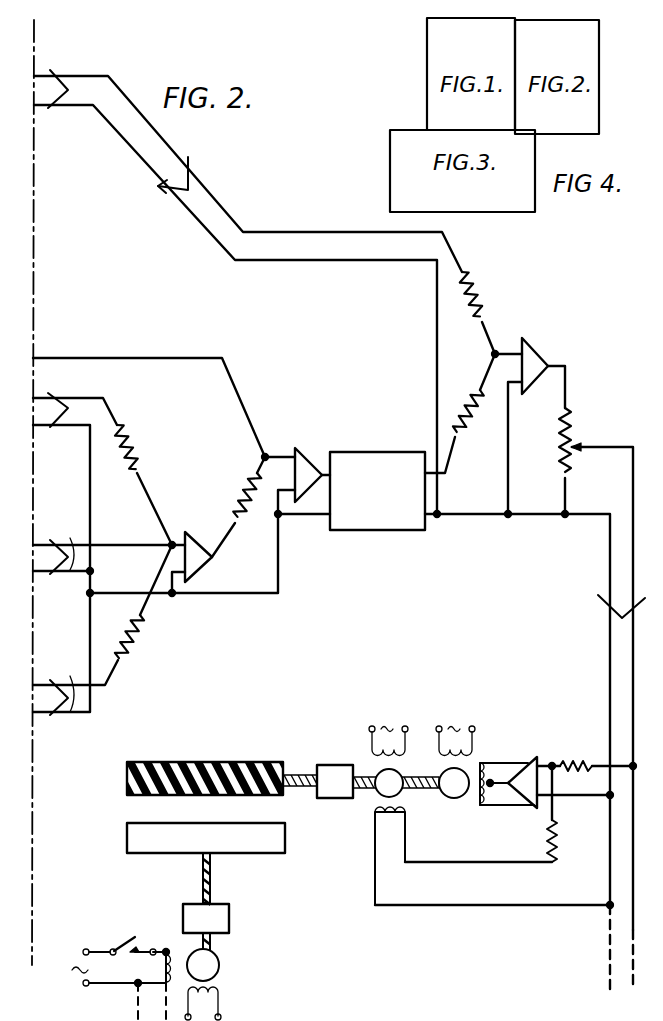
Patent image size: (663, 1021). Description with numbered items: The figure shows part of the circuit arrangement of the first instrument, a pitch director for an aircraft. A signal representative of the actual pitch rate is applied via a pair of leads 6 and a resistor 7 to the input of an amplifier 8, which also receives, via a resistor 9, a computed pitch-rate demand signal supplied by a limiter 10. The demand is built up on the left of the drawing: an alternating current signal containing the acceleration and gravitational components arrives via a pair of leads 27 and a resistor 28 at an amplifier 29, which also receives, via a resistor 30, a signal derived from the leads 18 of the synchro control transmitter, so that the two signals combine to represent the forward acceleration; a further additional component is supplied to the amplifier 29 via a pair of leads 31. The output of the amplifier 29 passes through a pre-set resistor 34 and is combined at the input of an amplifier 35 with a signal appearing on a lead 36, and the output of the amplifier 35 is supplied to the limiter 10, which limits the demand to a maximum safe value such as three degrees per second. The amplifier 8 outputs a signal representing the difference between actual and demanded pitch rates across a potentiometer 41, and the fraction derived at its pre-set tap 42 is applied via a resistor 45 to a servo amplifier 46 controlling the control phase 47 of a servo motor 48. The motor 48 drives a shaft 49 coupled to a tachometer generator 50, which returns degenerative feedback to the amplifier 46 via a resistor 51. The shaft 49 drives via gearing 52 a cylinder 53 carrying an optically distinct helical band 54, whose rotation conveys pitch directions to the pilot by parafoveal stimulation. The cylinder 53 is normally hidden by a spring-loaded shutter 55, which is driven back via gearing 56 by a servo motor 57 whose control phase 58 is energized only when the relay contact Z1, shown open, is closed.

The pair of leads 6 is at (72, 106).
The resistor 7 is at (474, 294).
The amplifier 8 is at (530, 350).
The resistor 9 is at (465, 438).
The limiter 10 is at (364, 453).
The leads 18 is at (43, 420).
The pair of leads 27 is at (66, 688).
The resistor 28 is at (136, 645).
The amplifier 29 is at (196, 532).
The resistor 30 is at (141, 484).
The pair of leads 31 is at (68, 545).
The pre-set resistor 34 is at (238, 492).
The amplifier 35 is at (305, 456).
The lead 36 is at (65, 360).
The potentiometer 41 is at (575, 442).
The pre-set tap 42 is at (603, 455).
The resistor 45 is at (576, 762).
The servo amplifier 46 is at (530, 762).
The control phase 47 is at (487, 762).
The servo motor 48 is at (462, 798).
The shaft 49 is at (362, 790).
The tachometer generator 50 is at (400, 797).
The resistor 51 is at (548, 840).
The gearing 52 is at (320, 768).
The cylinder 53 is at (127, 776).
The helical band 54 is at (208, 762).
The shutter 55 is at (127, 848).
The gearing 56 is at (230, 922).
The servo motor 57 is at (219, 960).
The control phase 58 is at (174, 952).
The relay contact Z1 is at (126, 938).